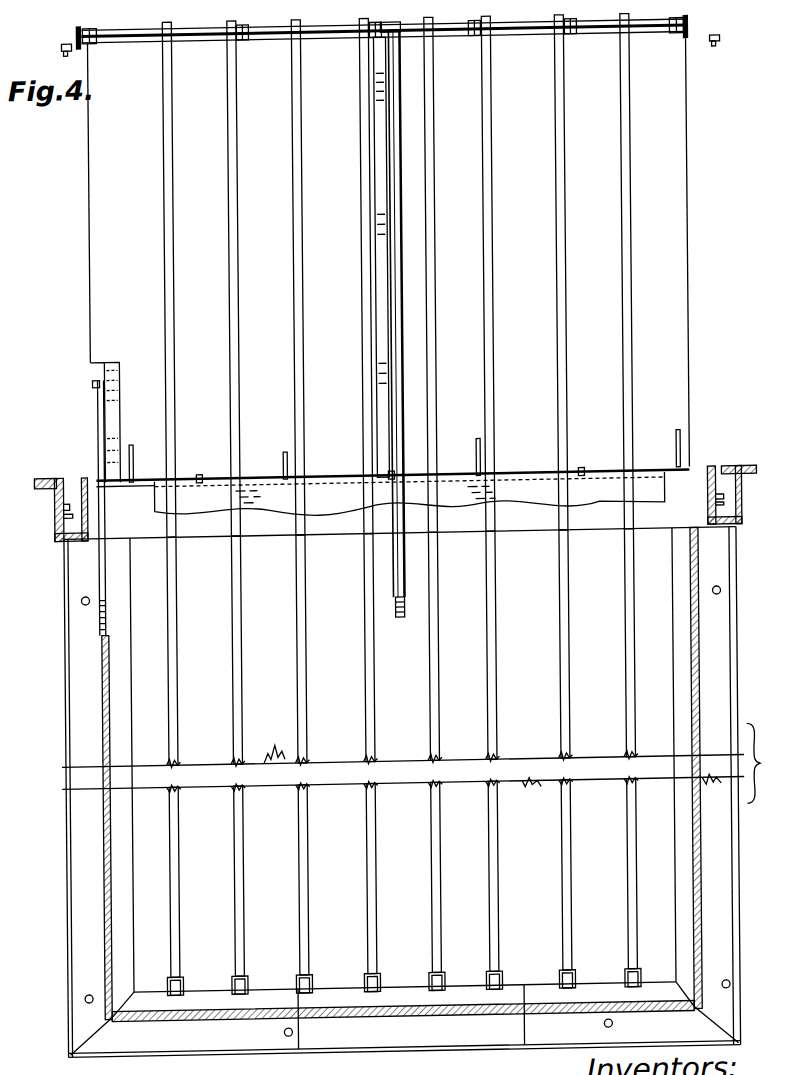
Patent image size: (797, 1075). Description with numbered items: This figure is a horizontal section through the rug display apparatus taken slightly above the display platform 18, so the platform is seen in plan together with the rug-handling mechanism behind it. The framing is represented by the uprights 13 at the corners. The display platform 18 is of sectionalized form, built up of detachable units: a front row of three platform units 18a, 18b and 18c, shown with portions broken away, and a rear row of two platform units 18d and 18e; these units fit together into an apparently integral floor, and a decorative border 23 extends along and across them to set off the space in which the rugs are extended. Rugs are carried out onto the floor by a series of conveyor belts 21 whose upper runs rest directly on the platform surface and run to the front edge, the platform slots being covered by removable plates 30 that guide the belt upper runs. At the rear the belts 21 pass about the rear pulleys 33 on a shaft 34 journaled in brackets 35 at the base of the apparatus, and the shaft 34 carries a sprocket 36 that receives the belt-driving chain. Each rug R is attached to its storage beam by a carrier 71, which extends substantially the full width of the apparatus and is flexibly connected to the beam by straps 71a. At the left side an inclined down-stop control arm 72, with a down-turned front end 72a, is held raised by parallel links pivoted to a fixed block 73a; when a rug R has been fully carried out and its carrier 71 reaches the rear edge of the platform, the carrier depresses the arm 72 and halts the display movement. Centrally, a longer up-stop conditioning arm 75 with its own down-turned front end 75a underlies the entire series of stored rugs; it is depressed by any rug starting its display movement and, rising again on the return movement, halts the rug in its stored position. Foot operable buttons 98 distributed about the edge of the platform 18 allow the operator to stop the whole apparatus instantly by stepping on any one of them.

The uprights 13 is at (64, 44).
The display platform 18 is at (426, 792).
The platform unit 18a is at (94, 705).
The platform unit 18b is at (425, 752).
The platform unit 18c is at (724, 677).
The platform unit 18d is at (102, 222).
The platform unit 18e is at (682, 276).
The conveyor belts 21 is at (177, 658).
The decorative border 23 is at (112, 901).
The removable plates 30 is at (181, 984).
The rear pulleys 33 is at (176, 27).
The shaft 34 is at (496, 30).
The brackets 35 is at (102, 27).
The sprocket 36 is at (84, 26).
The rug carrier 71 is at (321, 474).
The straps 71a is at (135, 446).
The down-stop control arm 72 is at (99, 417).
The down-turned front end 72a is at (107, 568).
The block 73a is at (114, 406).
The up-stop conditioning arm 75 is at (404, 290).
The down-turned front end 75a is at (405, 576).
The foot operable buttons 98 is at (81, 594).
The rug R is at (605, 493).